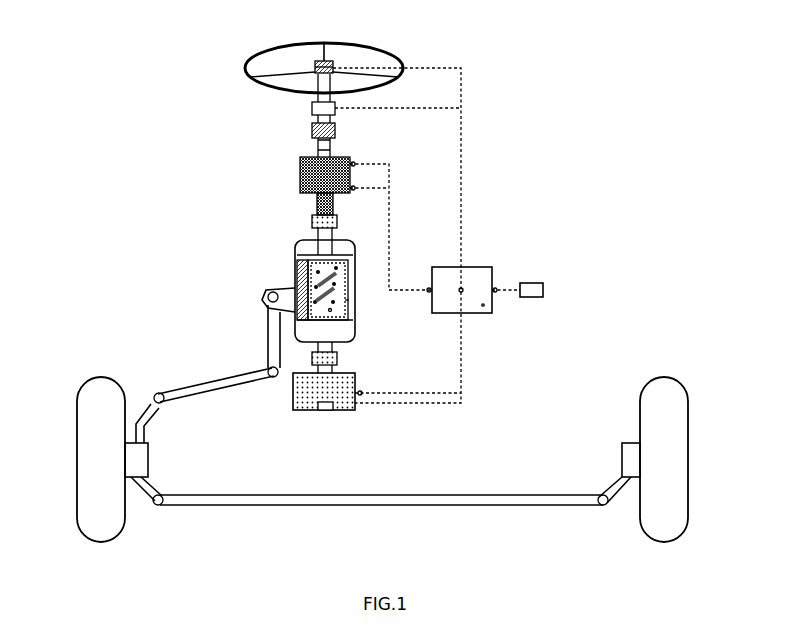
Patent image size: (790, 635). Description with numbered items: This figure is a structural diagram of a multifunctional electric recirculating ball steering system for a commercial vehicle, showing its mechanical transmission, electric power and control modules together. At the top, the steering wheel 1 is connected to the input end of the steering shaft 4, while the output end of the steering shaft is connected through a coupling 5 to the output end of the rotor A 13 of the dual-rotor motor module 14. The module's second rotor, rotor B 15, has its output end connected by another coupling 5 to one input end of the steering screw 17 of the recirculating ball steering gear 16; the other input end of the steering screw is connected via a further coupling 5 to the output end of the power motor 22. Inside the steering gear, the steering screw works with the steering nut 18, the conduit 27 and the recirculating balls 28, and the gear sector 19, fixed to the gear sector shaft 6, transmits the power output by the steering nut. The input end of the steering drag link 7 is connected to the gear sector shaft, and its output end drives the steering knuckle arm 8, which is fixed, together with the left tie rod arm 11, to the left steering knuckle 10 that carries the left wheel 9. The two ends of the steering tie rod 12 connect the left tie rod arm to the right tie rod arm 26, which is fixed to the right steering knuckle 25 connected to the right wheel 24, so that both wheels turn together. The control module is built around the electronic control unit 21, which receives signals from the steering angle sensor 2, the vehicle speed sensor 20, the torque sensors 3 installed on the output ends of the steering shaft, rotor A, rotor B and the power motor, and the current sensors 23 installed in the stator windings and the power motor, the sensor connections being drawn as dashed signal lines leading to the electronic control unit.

The steering wheel 1 is at (287, 44).
The steering angle sensor 2 is at (314, 70).
The torque sensor 3 is at (312, 110).
The steering shaft 4 is at (312, 125).
The coupling 5 is at (270, 340).
The gear sector shaft 6 is at (278, 360).
The steering drag link 7 is at (210, 390).
The steering knuckle arm 8 is at (140, 420).
The left wheel 9 is at (100, 430).
The left steering knuckle 10 is at (145, 460).
The left tie rod arm 11 is at (148, 487).
The steering tie rod 12 is at (317, 498).
The rotor A 13 is at (333, 145).
The dual-rotor motor module 14 is at (350, 170).
The rotor B 15 is at (333, 202).
The recirculating ball steering gear 16 is at (328, 250).
The steering screw 17 is at (352, 263).
The steering nut 18 is at (300, 304).
The gear sector 19 is at (492, 268).
The vehicle speed sensor 20 is at (543, 290).
The electronic control unit (ECU) 21 is at (483, 305).
The power motor 22 is at (333, 396).
The current sensor 23 is at (355, 403).
The right wheel 24 is at (668, 443).
The right steering knuckle 25 is at (623, 458).
The right tie rod arm 26 is at (625, 487).
The conduit 27 is at (347, 300).
The recirculating ball 28 is at (330, 310).